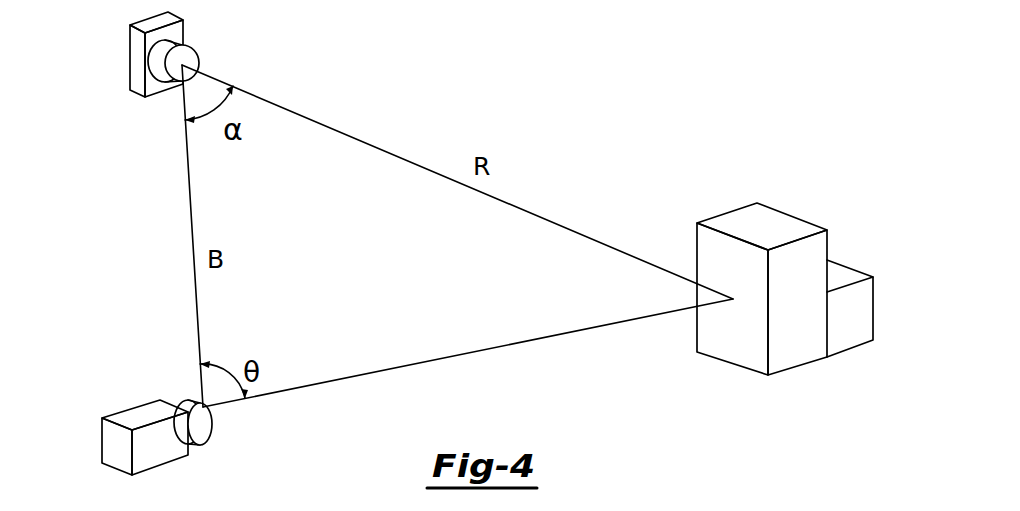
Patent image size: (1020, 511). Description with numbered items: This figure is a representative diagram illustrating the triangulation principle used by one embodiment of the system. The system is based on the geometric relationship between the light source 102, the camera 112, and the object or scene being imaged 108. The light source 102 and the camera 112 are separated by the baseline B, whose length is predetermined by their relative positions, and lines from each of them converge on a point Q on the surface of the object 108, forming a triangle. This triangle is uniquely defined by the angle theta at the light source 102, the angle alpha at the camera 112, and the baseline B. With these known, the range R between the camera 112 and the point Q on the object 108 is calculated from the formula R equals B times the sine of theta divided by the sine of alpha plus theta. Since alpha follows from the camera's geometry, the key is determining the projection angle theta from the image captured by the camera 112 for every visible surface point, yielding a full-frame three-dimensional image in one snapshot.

The camera 112 is at (135, 40).
The light source 102 is at (110, 432).
The object or scene being imaged 108 is at (722, 366).